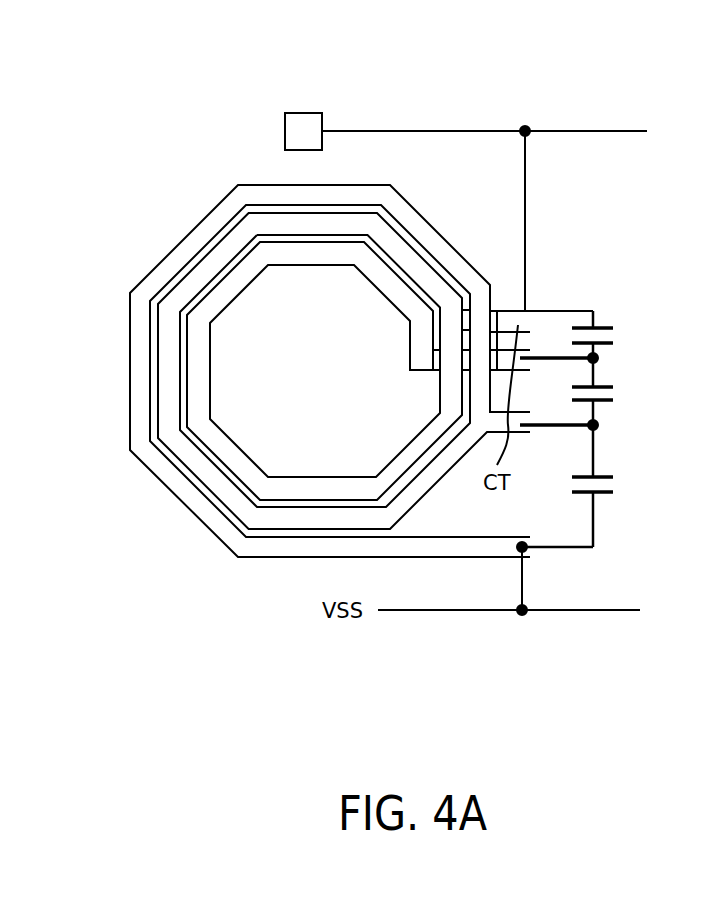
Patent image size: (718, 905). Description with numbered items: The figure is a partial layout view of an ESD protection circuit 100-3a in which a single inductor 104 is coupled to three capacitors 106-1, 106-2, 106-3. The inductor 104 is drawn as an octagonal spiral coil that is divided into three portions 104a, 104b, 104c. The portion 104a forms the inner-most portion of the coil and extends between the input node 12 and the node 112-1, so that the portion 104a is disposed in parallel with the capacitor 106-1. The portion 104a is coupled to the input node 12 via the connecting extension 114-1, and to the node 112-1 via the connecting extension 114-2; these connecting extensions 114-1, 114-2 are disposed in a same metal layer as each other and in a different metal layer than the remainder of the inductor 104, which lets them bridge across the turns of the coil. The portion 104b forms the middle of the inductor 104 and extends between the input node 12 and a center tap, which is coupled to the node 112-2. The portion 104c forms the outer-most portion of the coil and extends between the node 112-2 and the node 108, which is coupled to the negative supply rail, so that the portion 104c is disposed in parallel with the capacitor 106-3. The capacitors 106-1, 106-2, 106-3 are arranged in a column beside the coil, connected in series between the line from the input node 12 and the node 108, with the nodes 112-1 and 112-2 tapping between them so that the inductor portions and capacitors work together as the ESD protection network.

The ESD protection circuit 100-3a is at (566, 107).
The input node 12 is at (285, 129).
The inductor 104 is at (329, 368).
The portion 104a is at (244, 285).
The portion 104b is at (372, 222).
The portion 104c is at (241, 540).
The capacitor 106-1 is at (615, 331).
The capacitor 106-2 is at (615, 396).
The capacitor 106-3 is at (615, 484).
The node 108 is at (528, 549).
The node 112-1 is at (600, 358).
The node 112-2 is at (600, 426).
The connecting extension 114-1 is at (498, 312).
The connecting extension 114-2 is at (438, 371).